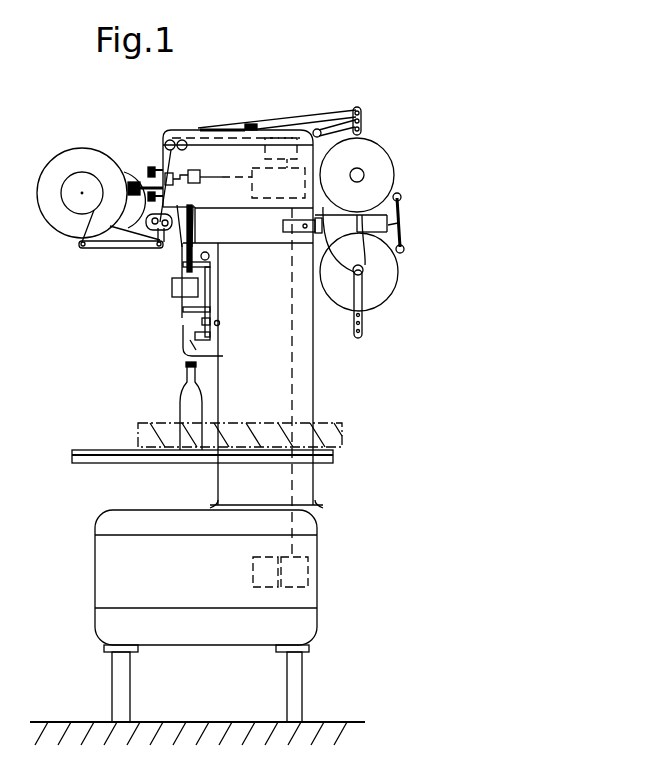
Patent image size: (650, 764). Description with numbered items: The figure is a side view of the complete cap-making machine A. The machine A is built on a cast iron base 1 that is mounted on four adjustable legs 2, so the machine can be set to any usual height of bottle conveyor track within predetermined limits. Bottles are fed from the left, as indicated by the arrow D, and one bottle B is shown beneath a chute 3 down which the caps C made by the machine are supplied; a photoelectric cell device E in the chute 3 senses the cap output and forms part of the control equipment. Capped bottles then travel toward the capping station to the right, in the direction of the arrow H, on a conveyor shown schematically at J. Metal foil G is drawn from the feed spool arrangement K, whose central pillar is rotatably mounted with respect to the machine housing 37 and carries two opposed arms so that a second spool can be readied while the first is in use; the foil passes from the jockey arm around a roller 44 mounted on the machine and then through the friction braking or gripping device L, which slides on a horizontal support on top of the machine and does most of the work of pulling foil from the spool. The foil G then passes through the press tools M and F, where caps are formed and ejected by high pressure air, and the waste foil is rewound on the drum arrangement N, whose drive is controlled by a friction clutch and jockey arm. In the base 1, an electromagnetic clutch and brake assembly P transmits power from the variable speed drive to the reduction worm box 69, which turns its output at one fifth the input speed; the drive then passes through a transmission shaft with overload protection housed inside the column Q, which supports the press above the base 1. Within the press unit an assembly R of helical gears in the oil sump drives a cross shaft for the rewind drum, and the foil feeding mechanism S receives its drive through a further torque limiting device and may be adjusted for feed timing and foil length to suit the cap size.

The cast iron base 1 is at (304, 626).
The adjustable legs 2 is at (127, 692).
The chute 3 is at (195, 216).
The machine housing 37 is at (298, 126).
The roller 44 is at (320, 130).
The reduction worm box 69 is at (308, 564).
The machine A is at (60, 300).
The bottle B is at (178, 402).
The caps C is at (180, 176).
The arrow indicating bottle feed direction D is at (125, 413).
The photoelectric cell device E is at (172, 290).
The press tool F is at (238, 178).
The metal foil G is at (218, 128).
The arrow indicating direction to capping station H is at (275, 413).
The conveyor J is at (254, 440).
The feed spool arrangement K is at (380, 160).
The friction braking or gripping device L is at (251, 124).
The press tool M is at (163, 160).
The rewind drum arrangement N is at (41, 218).
The electromagnetic clutch and brake assembly P is at (253, 571).
The column Q is at (308, 482).
The sump gear assembly R is at (287, 190).
The foil feeding mechanism S is at (268, 156).